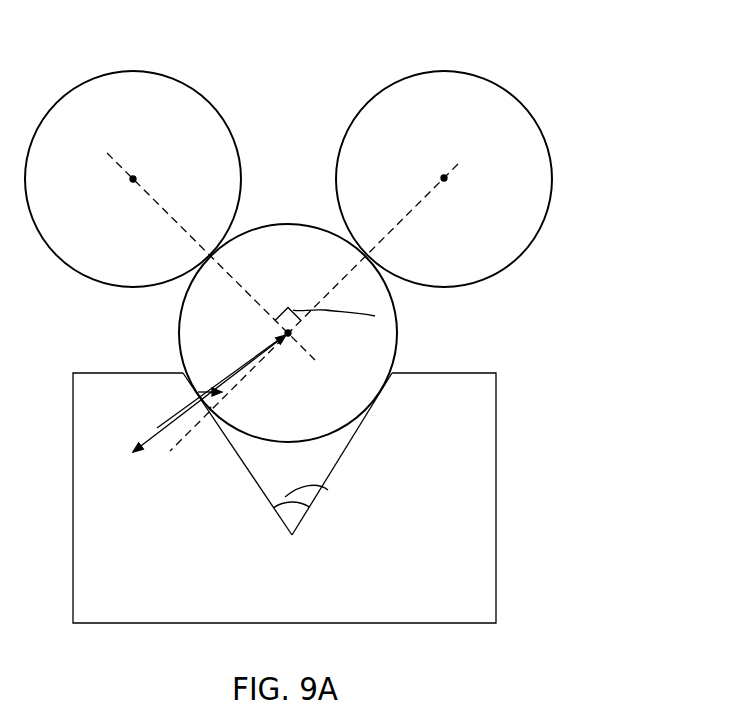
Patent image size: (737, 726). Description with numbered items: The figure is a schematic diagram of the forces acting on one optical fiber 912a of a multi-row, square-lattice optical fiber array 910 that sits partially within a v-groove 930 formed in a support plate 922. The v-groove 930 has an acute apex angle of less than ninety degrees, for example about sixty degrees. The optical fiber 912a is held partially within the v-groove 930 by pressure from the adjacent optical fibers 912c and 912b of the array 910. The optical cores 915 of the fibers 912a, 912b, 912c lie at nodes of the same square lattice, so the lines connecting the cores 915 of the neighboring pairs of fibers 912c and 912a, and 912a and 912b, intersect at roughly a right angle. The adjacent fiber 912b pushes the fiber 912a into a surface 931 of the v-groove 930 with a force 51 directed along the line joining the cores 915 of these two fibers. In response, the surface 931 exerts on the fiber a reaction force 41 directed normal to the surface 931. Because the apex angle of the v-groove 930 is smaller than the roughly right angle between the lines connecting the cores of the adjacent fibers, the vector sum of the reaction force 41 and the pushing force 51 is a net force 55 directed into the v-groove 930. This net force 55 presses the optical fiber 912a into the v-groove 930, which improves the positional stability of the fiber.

The square-lattice optical fiber array 910 is at (566, 79).
The optical fiber 912a is at (317, 278).
The adjacent optical fiber 912b is at (473, 130).
The adjacent optical fiber 912c is at (162, 119).
The optical core 915 is at (128, 179).
The support plate 922 is at (423, 572).
The v-groove 930 is at (287, 454).
The surface of the v-groove 931 is at (310, 477).
The reaction force 41 is at (253, 358).
The force 51 is at (157, 427).
The net force 55 is at (210, 408).